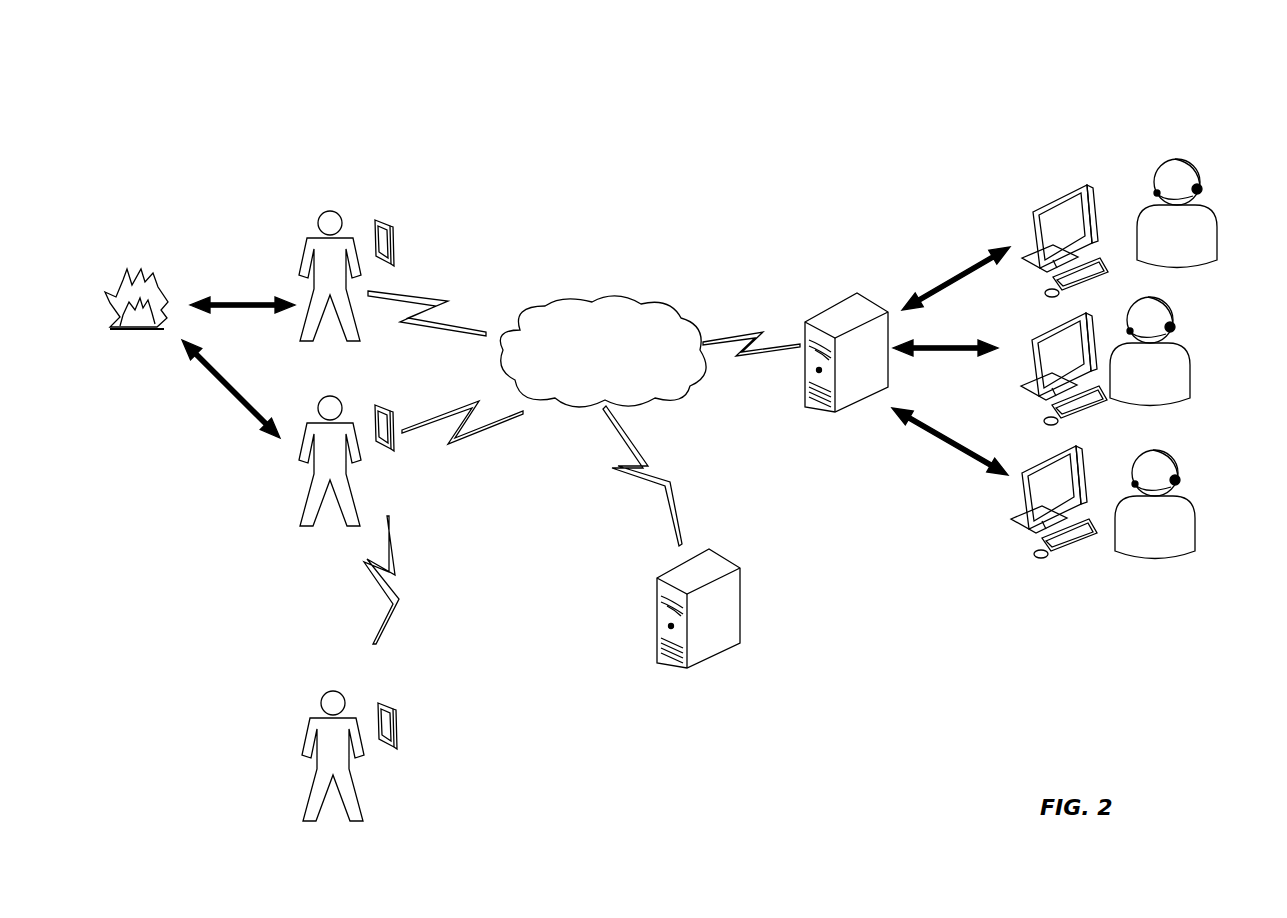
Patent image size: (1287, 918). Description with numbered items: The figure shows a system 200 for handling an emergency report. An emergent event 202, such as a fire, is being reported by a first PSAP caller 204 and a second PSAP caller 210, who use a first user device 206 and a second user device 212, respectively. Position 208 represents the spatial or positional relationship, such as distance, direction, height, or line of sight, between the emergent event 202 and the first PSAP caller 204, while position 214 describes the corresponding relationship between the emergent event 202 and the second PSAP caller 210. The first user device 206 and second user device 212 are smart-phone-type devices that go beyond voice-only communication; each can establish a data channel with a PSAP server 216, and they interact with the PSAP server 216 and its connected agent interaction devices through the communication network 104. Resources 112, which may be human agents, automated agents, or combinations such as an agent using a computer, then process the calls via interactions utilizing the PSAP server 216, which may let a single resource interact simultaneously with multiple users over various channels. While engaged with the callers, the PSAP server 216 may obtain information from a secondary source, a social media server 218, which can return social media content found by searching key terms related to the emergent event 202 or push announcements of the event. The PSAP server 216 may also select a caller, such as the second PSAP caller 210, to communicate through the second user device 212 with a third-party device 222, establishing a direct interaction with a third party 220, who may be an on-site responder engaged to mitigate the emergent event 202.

The system 200 is at (262, 103).
The emergent event 202 is at (151, 243).
The first PSAP caller 204 is at (341, 219).
The first user device 206 is at (393, 238).
The position 208 is at (225, 304).
The second PSAP caller 210 is at (340, 407).
The second user device 212 is at (393, 433).
The position 214 is at (236, 388).
The communication network 104 is at (617, 303).
The PSAP server 216 is at (846, 377).
The social media server 218 is at (698, 636).
The third party 220 is at (342, 703).
The third-party device 222 is at (397, 728).
The resources 112 is at (1180, 143).